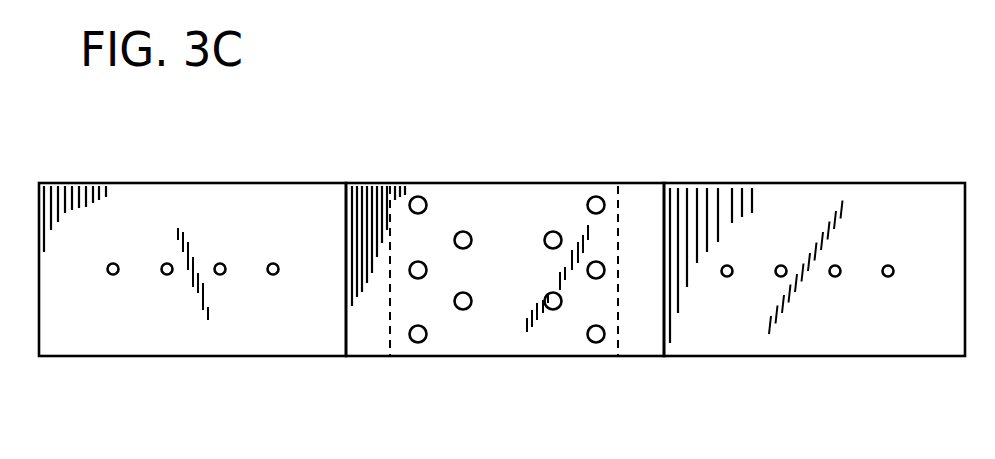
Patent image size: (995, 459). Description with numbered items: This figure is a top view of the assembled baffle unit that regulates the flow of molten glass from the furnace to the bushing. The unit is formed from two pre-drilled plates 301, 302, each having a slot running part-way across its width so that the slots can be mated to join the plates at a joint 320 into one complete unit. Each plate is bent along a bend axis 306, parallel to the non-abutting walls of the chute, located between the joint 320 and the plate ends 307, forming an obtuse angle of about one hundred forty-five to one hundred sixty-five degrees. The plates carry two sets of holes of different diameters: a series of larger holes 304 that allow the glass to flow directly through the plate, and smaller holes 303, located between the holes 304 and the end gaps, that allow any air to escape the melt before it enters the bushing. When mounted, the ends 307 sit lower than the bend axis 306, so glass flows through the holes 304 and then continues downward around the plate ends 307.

The baffle plate 301 is at (197, 183).
The baffle plate 302 is at (848, 183).
The smaller holes 303 is at (113, 275).
The holes 304 is at (596, 334).
The bend axis 306 is at (346, 202).
The plate ends 307 is at (390, 330).
The joint 320 is at (504, 208).